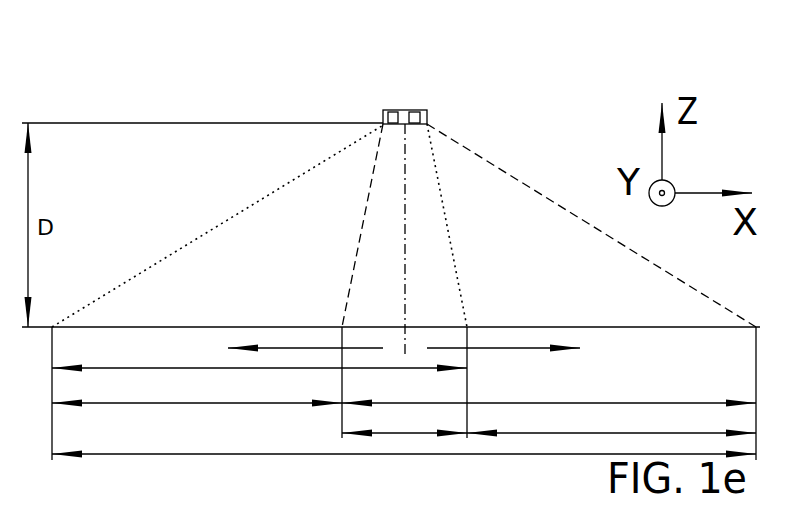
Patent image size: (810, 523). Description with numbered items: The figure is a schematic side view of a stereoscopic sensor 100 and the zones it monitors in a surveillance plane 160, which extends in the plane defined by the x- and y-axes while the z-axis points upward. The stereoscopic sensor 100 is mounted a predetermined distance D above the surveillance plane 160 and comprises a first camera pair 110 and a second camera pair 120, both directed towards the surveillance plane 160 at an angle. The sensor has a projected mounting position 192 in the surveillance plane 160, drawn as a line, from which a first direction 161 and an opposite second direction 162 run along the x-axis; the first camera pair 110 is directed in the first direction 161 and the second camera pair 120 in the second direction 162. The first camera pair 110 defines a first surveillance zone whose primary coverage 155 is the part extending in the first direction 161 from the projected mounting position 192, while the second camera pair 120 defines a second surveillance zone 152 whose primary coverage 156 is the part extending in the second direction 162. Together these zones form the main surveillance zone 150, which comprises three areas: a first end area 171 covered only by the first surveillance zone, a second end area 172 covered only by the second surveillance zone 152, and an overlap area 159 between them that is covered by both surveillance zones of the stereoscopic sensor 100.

The stereoscopic sensor 100 is at (385, 107).
The first camera pair 110 is at (388, 110).
The second camera pair 120 is at (415, 110).
The main surveillance zone 150 is at (622, 58).
The second surveillance zone 152 is at (545, 403).
The primary coverage 155 is at (173, 368).
The primary coverage 156 is at (438, 103).
The overlap area 159 is at (396, 433).
The surveillance plane 160 is at (135, 327).
The first direction 161 is at (287, 348).
The second direction 162 is at (522, 348).
The first end area 171 is at (207, 403).
The second end area 172 is at (600, 433).
The projected mounting position 192 is at (404, 328).